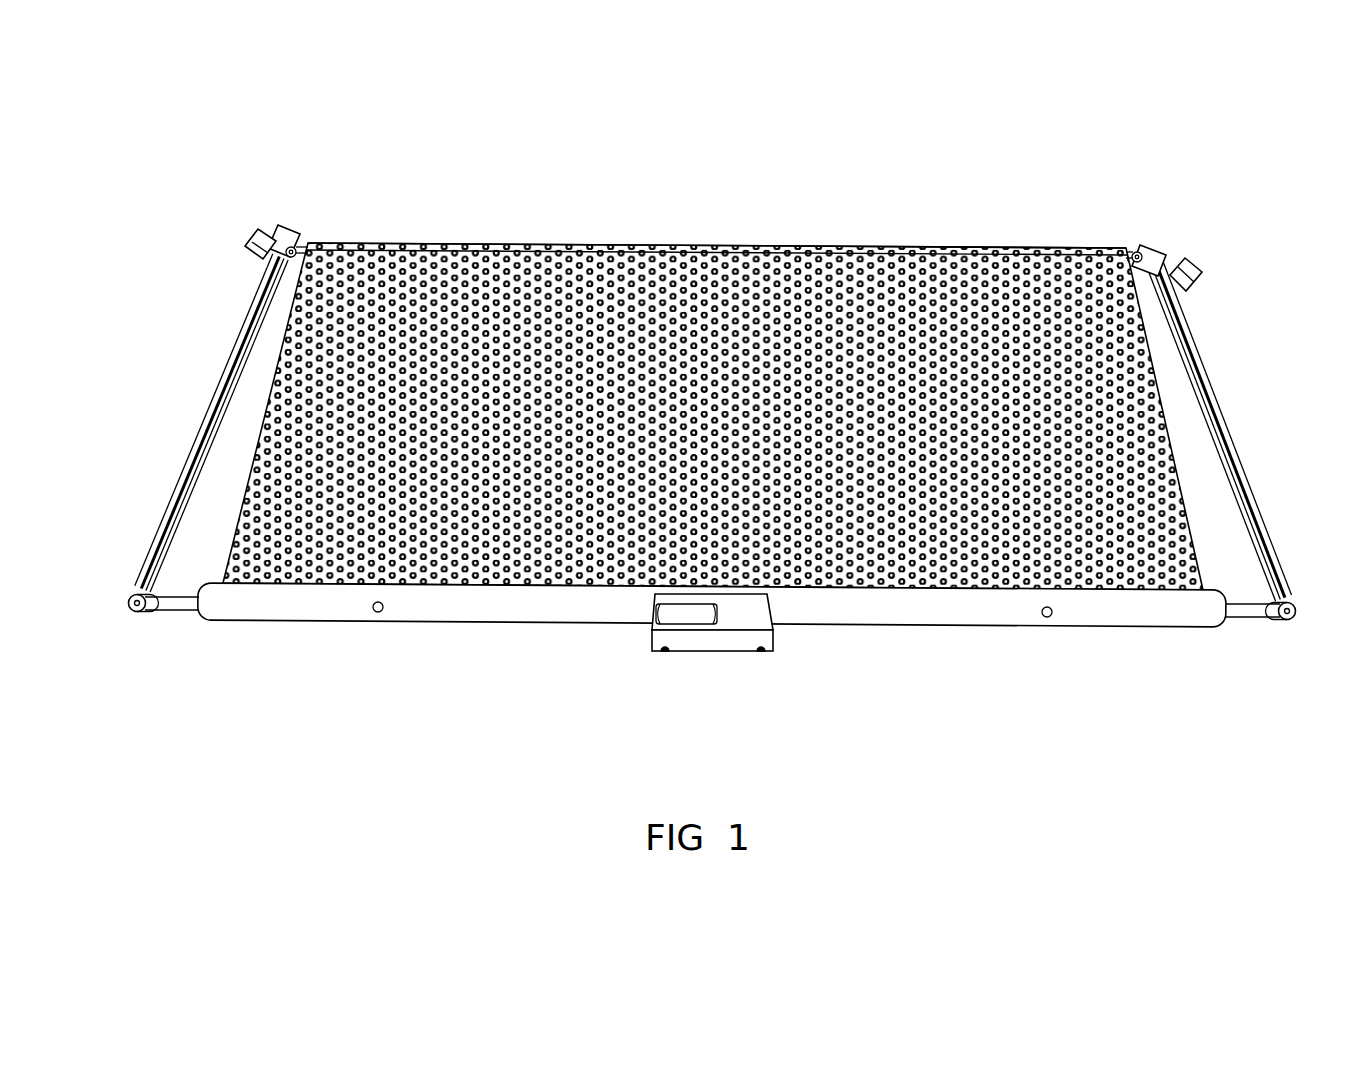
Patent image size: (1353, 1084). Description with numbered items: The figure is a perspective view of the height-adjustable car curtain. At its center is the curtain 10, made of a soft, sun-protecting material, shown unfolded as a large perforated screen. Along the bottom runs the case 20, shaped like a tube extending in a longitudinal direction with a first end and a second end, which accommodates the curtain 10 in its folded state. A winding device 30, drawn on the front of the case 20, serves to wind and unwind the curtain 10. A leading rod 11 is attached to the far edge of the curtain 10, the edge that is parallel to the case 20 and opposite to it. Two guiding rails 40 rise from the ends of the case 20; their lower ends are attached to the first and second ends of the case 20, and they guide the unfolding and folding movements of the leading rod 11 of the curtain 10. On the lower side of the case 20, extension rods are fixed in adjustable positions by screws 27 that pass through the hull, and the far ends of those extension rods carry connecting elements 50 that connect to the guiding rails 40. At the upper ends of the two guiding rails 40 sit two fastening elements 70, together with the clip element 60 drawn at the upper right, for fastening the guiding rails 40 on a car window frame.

The curtain 10 is at (248, 425).
The leading rod 11 is at (460, 245).
The case 20 is at (562, 633).
The screws 27 is at (376, 613).
The winding device 30 is at (760, 670).
The guiding rails 40 is at (1245, 447).
The connecting elements 50 is at (120, 603).
The attachment clip 60 is at (1148, 247).
The fastening elements 70 is at (237, 239).